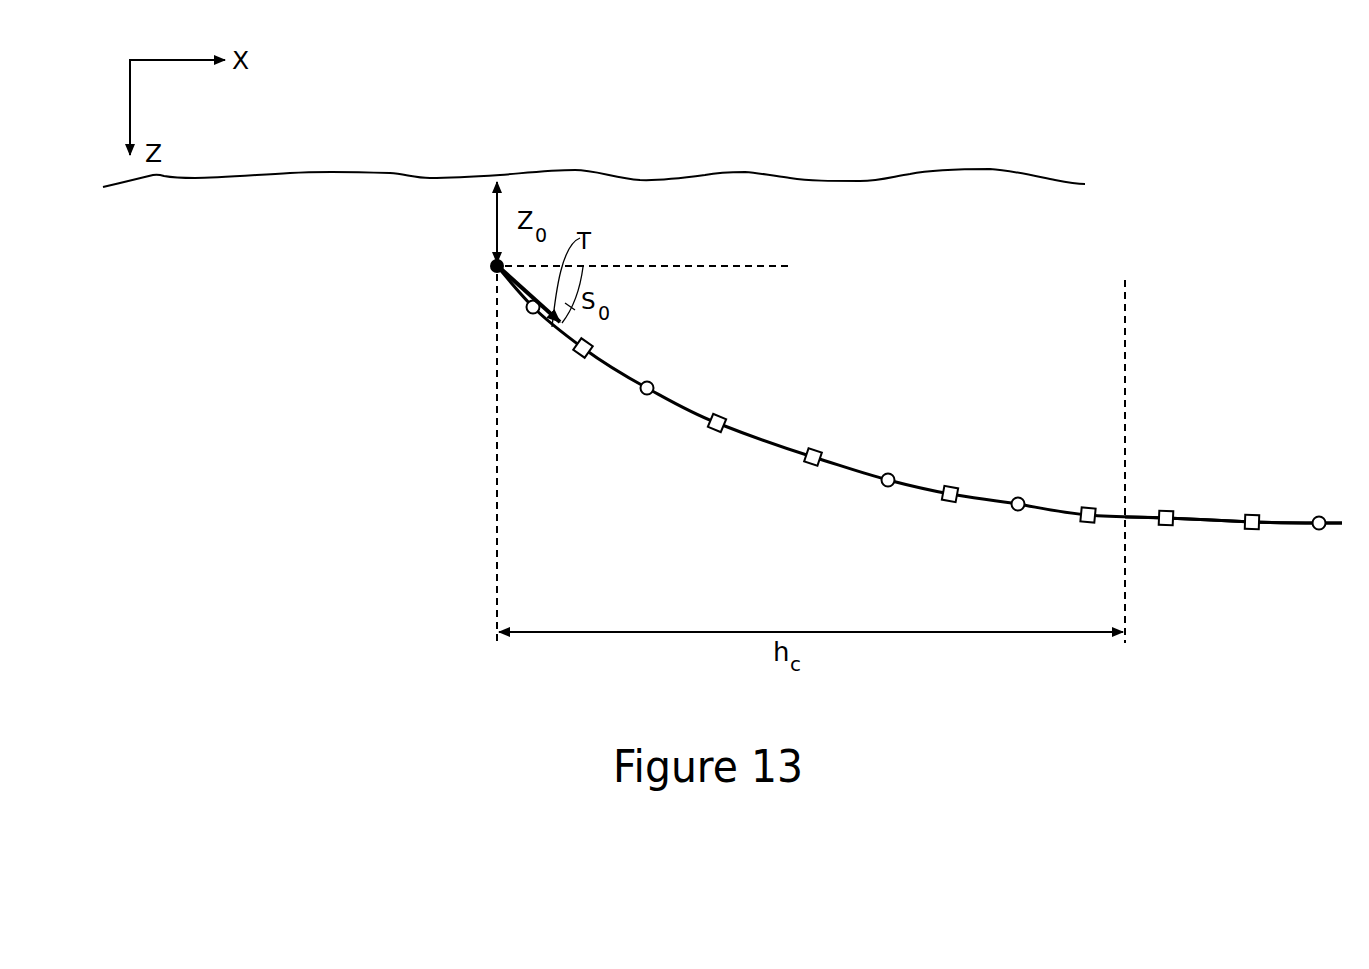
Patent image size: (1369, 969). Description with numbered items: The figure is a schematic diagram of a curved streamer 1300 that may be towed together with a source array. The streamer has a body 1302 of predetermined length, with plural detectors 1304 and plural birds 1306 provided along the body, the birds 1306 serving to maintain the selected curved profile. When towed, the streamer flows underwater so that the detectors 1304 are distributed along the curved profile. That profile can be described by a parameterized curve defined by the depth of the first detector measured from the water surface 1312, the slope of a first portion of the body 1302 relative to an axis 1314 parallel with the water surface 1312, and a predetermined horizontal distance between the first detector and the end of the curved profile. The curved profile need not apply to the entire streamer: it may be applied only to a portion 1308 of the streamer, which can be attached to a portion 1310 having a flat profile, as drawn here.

The curved streamer 1300 is at (618, 493).
The body 1302 is at (750, 432).
The detectors 1304 is at (653, 383).
The birds 1306 is at (593, 342).
The portion with the curved profile 1308 is at (857, 470).
The portion with a flat profile 1310 is at (1208, 518).
The water surface 1312 is at (730, 172).
The axis 1314 is at (722, 268).